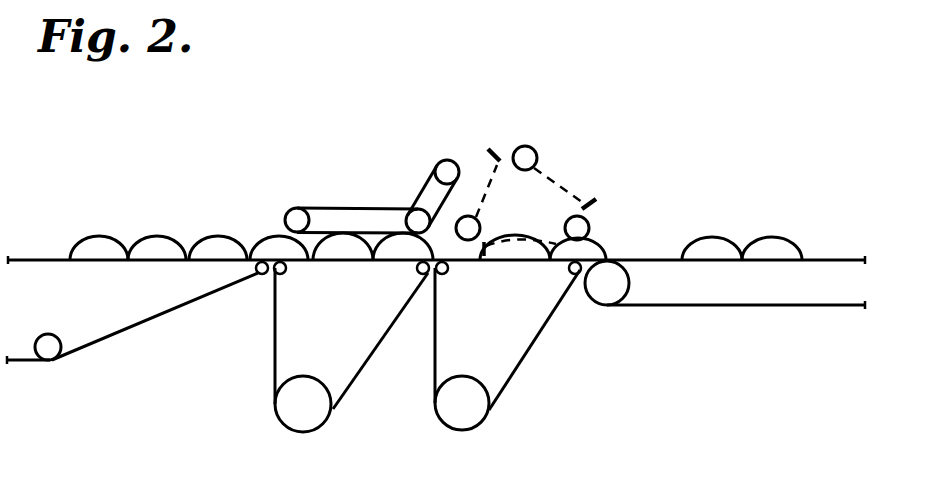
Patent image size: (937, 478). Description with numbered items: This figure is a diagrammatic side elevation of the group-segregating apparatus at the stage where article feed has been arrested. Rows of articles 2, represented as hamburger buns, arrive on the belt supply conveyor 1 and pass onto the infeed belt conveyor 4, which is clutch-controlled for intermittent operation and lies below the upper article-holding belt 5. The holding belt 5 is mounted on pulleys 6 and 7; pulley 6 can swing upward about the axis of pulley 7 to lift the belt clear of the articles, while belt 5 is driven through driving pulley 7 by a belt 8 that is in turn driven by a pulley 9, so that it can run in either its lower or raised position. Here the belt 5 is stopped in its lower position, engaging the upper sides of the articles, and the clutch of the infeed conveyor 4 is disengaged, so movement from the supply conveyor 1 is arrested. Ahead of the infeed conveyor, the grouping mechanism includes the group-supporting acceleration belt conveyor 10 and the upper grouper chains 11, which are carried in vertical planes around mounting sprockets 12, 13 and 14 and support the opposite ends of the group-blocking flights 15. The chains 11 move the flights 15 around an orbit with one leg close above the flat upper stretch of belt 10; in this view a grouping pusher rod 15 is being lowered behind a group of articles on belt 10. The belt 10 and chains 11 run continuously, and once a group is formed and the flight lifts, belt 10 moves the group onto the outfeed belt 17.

The supply conveyor 1 is at (37, 258).
The articles 2 is at (107, 242).
The infeed belt conveyor 4 is at (273, 348).
The upper article-holding belt 5 is at (331, 207).
The pulley 6 is at (292, 212).
The pulley 7 is at (414, 216).
The belt 8 is at (428, 181).
The pulley 9 is at (450, 161).
The group-supporting acceleration belt conveyor 10 is at (528, 358).
The grouper chains 11 is at (556, 176).
The mounting sprocket 12 is at (590, 226).
The mounting sprocket 13 is at (479, 226).
The mounting sprocket 14 is at (530, 147).
The group-blocking flight 15 is at (501, 148).
The outfeed belt 17 is at (692, 305).